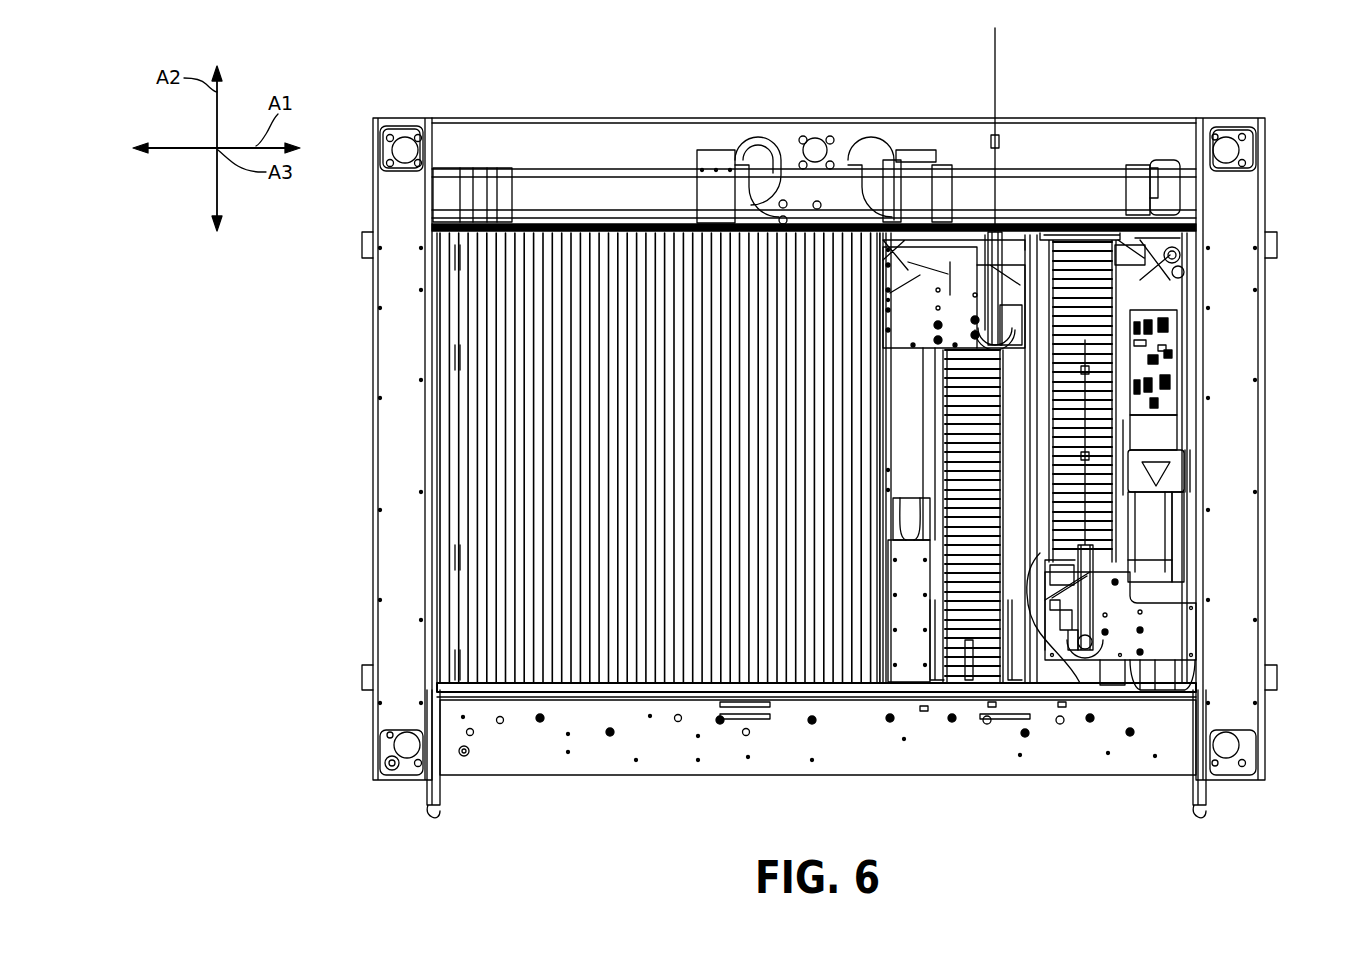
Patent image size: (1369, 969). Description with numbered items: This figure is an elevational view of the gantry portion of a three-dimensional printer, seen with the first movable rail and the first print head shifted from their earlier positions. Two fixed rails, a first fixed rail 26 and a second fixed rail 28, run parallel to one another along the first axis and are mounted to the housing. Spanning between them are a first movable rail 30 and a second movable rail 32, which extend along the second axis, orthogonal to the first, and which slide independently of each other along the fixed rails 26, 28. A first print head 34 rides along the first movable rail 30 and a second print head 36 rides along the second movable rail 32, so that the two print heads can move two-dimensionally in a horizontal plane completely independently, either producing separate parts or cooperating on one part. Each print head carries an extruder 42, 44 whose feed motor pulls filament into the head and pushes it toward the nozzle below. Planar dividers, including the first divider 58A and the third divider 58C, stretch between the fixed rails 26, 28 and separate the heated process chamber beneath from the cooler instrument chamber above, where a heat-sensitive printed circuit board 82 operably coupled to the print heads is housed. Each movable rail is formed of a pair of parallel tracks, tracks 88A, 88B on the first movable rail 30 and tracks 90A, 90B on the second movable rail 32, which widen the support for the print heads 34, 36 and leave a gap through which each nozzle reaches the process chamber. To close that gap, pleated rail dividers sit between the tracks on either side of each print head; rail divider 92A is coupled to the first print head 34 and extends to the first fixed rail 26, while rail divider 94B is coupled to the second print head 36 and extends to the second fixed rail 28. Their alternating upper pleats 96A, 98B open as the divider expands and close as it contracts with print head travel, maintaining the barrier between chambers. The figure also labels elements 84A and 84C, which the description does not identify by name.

The first fixed rail 26 is at (1063, 758).
The second fixed rail 28 is at (932, 140).
The first movable rail 30 is at (910, 622).
The second movable rail 32 is at (1165, 437).
The first print head 34 is at (962, 312).
The second print head 36 is at (1163, 654).
The extruder 42 is at (1036, 278).
The extruder 44 is at (1040, 570).
The first divider 58A is at (610, 280).
The third divider 58C is at (1036, 645).
The printed circuit board 82 is at (1165, 380).
The fin array 84A is at (550, 305).
The chain track 84C is at (1005, 308).
The track 88A is at (940, 643).
The track 88B is at (1019, 647).
The track 90A is at (1042, 553).
The track 90B is at (1113, 478).
The rail divider 92A is at (1103, 347).
The rail divider 94B is at (1102, 302).
The upper pleats 96A is at (975, 630).
The upper pleats 98B is at (972, 450).